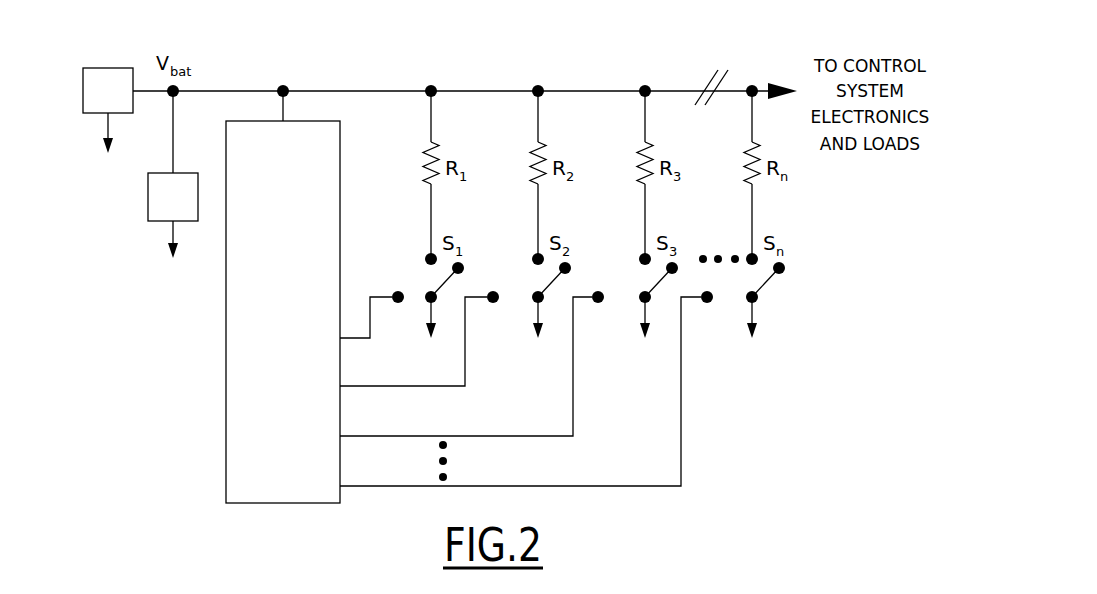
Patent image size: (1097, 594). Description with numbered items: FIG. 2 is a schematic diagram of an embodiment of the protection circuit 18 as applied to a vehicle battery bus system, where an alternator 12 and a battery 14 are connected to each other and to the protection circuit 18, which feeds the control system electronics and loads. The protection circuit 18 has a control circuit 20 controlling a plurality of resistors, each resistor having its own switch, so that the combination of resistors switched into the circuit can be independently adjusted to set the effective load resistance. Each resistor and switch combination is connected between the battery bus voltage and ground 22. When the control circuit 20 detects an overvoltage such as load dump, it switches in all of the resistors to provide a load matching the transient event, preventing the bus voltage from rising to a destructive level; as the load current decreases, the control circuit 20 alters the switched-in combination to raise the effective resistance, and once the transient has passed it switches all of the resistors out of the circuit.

The alternator 12 is at (108, 110).
The battery 14 is at (173, 174).
The protection circuit 18 is at (411, 65).
The control circuit 20 is at (226, 398).
The ground 22 is at (106, 143).